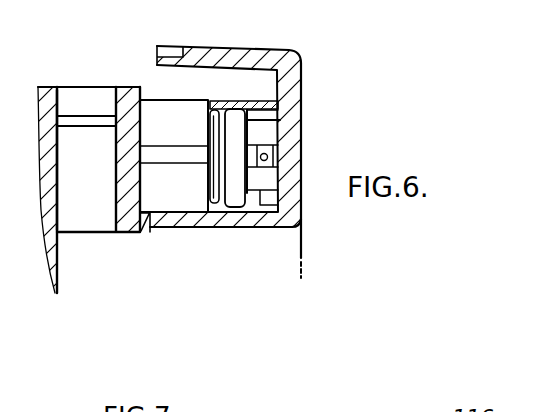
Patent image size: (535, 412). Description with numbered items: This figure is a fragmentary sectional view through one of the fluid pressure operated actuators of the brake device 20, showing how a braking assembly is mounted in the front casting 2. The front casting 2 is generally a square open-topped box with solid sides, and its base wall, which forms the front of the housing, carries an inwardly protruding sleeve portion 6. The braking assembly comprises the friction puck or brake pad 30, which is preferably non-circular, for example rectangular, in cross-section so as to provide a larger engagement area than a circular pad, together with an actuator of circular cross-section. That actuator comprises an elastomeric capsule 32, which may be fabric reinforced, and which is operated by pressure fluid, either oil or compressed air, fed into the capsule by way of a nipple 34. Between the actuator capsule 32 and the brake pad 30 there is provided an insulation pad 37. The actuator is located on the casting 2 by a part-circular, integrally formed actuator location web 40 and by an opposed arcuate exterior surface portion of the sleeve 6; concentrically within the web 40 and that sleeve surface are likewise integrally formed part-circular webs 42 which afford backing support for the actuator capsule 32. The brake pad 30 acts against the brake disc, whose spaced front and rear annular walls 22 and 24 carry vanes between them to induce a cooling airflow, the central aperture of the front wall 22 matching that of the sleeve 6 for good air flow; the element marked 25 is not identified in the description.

The front casting 2 is at (218, 38).
The sleeve portion 6 is at (158, 222).
The brake device 20 is at (66, 260).
The front annular wall 22 is at (138, 79).
The rear annular wall 24 is at (63, 113).
The shoulder 25 is at (85, 143).
The brake pad 30 is at (167, 113).
The elastomeric capsule 32 is at (235, 201).
The nipple 34 is at (264, 162).
The insulation pad 37 is at (212, 195).
The actuator location web 40 is at (254, 117).
The part-circular webs 42 is at (250, 113).